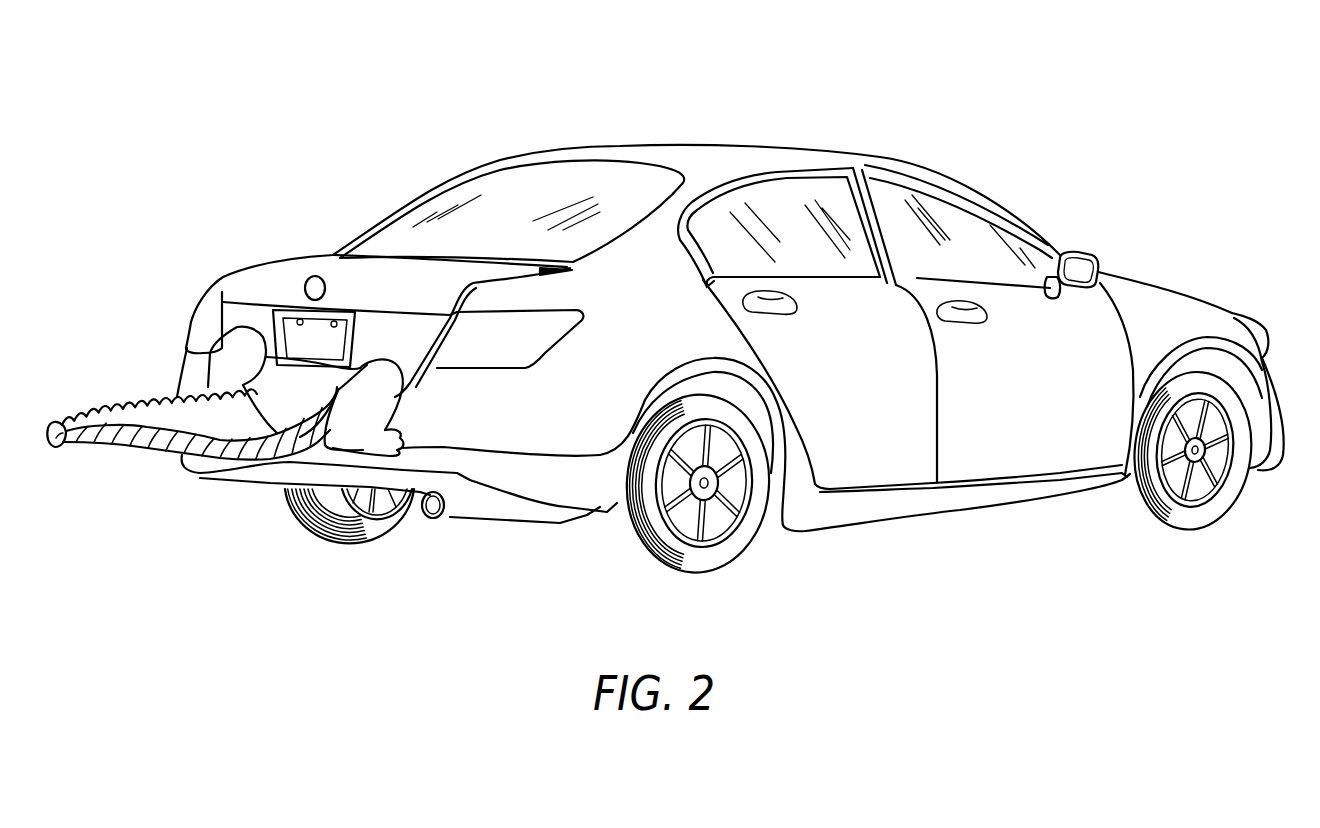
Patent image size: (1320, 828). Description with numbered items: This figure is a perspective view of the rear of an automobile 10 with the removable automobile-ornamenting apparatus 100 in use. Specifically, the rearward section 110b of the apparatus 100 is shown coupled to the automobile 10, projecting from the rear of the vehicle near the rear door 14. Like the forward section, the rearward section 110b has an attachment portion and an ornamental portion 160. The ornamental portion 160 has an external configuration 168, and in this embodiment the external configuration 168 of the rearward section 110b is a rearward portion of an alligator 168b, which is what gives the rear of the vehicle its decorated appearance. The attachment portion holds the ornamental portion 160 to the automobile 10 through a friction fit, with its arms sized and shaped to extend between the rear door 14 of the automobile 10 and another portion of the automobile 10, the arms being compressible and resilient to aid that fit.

The automobile 10 is at (668, 312).
The rear door 14 is at (264, 272).
The removable automobile-ornamenting apparatus 100 is at (225, 339).
The rearward section 110b is at (115, 388).
The ornamental portion 160 is at (129, 465).
The external configuration 168 is at (270, 420).
The rearward portion of an alligator 168b is at (232, 430).